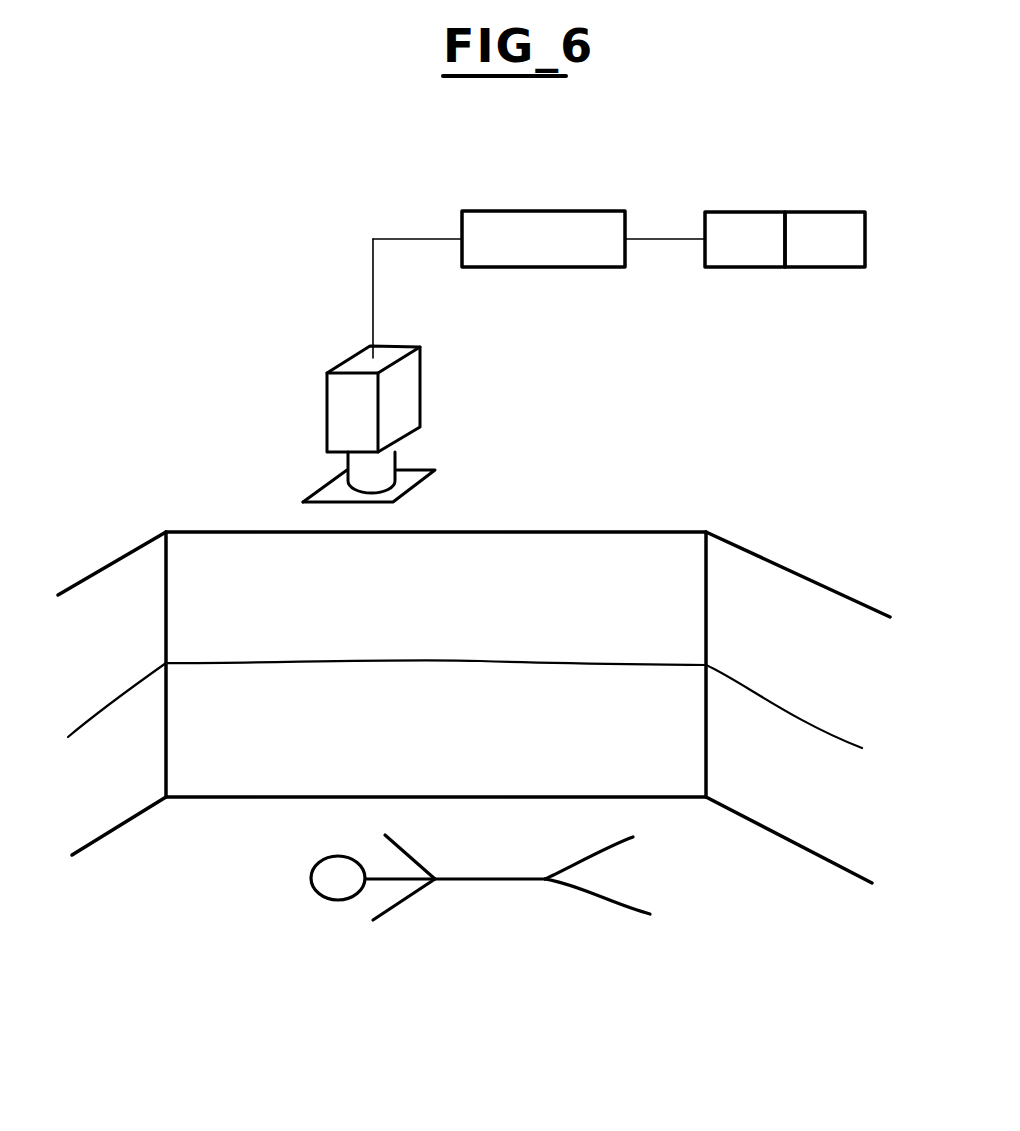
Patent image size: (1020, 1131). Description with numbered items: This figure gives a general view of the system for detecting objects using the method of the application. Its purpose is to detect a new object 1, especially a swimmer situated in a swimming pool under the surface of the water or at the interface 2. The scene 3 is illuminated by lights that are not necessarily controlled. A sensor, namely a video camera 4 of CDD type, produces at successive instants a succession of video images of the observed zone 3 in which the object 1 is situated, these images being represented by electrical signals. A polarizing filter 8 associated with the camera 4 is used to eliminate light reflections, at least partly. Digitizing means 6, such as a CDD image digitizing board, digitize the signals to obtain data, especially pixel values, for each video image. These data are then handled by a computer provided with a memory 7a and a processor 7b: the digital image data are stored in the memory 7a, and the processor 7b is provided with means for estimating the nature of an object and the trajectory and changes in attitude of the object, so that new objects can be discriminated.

The new object 1 is at (490, 882).
The interface 2 is at (755, 688).
The scene 3 is at (580, 596).
The video camera 4 is at (327, 385).
The digitizing means 6 is at (544, 229).
The memory 7a is at (822, 229).
The processor 7b is at (740, 229).
The polarizing filter 8 is at (327, 492).